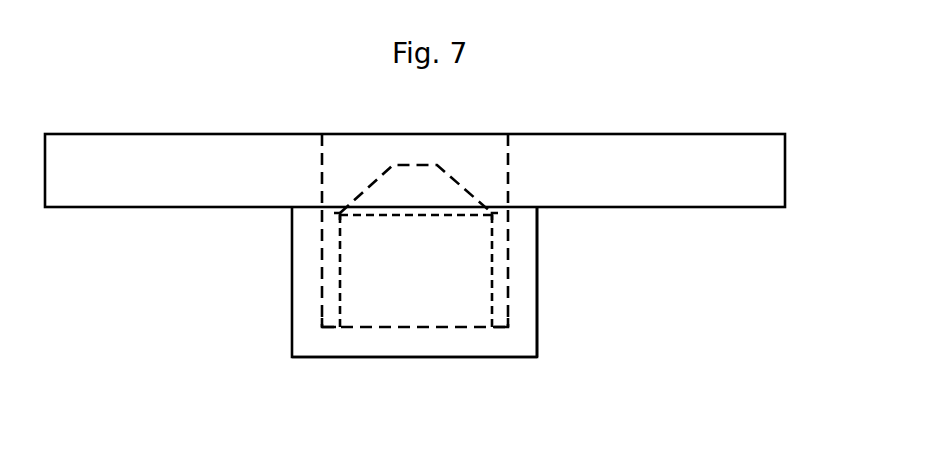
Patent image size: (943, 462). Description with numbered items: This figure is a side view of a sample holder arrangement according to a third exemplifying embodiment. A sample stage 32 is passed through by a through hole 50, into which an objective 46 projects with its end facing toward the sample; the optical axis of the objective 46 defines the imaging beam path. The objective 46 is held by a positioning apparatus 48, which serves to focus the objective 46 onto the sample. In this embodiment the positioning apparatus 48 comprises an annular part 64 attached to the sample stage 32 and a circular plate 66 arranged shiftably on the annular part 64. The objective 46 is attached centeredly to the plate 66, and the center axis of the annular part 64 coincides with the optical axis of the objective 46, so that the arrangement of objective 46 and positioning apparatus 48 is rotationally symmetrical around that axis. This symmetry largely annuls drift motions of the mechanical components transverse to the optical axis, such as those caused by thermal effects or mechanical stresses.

The sample stage 32 is at (765, 148).
The through hole 50 is at (493, 150).
The objective 46 is at (352, 282).
The positioning apparatus 48 is at (569, 386).
The annular part 64 is at (525, 261).
The circular plate 66 is at (365, 345).